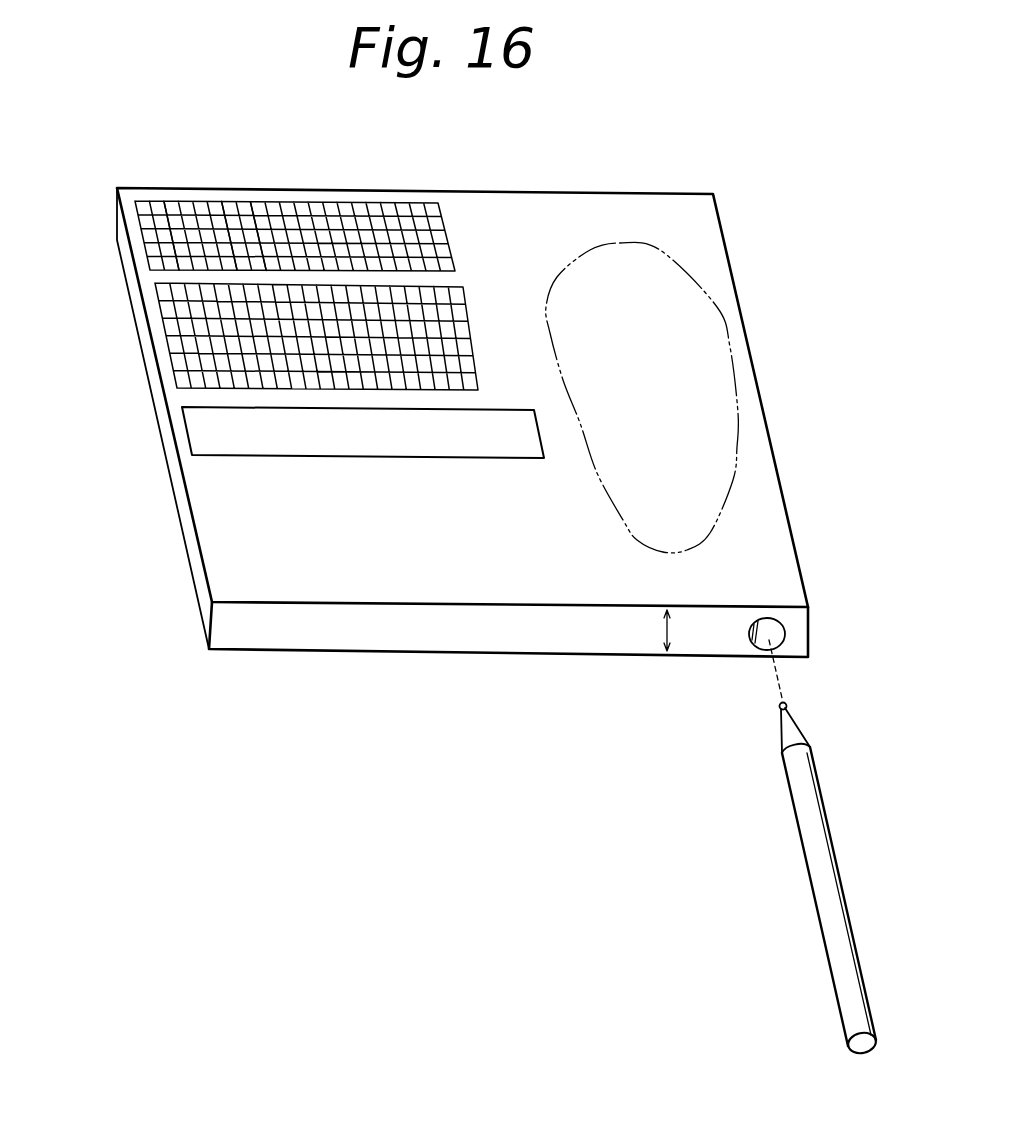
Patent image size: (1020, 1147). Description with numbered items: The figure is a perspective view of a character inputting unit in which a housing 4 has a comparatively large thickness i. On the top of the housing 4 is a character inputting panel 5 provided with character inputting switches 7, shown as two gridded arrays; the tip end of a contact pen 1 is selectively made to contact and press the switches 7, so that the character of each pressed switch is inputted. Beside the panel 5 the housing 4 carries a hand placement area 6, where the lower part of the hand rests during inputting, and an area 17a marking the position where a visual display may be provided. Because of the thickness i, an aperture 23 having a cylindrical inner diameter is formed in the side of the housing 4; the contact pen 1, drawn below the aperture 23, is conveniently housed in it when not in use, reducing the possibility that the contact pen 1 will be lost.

The contact pen 1 is at (818, 872).
The housing 4 is at (348, 578).
The character inputting panel 5 is at (163, 327).
The hand placement area 6 is at (728, 397).
The character inputting switches 7 is at (260, 201).
The area for visual display 17a is at (360, 440).
The aperture 23 is at (785, 628).
The thickness i is at (665, 622).